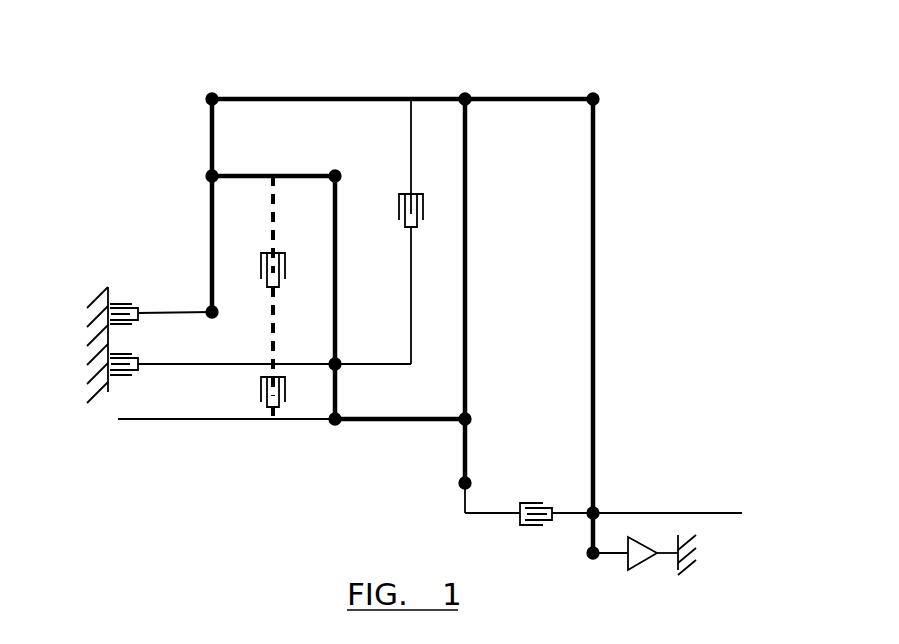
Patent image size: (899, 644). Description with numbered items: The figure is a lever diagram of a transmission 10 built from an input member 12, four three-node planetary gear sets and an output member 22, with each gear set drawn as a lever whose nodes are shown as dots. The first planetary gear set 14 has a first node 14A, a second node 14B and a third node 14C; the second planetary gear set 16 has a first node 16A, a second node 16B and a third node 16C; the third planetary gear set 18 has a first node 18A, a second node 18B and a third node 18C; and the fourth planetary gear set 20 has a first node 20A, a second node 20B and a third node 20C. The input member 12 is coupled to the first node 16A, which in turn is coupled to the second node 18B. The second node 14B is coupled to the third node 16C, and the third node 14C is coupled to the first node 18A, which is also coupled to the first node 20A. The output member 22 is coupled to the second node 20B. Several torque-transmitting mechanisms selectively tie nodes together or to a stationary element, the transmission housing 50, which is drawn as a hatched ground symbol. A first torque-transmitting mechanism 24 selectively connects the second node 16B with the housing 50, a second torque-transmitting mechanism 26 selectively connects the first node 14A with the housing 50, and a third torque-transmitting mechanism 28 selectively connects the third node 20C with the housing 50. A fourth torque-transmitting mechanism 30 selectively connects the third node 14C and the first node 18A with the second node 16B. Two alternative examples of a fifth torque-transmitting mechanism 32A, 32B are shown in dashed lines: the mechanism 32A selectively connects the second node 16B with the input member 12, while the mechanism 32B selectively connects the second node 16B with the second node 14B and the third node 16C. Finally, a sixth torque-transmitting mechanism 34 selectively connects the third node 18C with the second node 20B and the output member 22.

The transmission 10 is at (677, 72).
The input member 12 is at (136, 422).
The first planetary gear set 14 is at (195, 104).
The first node 14A is at (213, 318).
The second node 14B is at (208, 174).
The third node 14C is at (212, 95).
The second planetary gear set 16 is at (320, 157).
The first node 16A is at (334, 425).
The second node 16B is at (340, 368).
The third node 16C is at (336, 172).
The third planetary gear set 18 is at (448, 509).
The first node 18A is at (466, 94).
The second node 18B is at (470, 416).
The third node 18C is at (459, 485).
The fourth planetary gear set 20 is at (587, 574).
The first node 20A is at (594, 94).
The second node 20B is at (596, 508).
The third node 20C is at (588, 556).
The output member 22 is at (713, 512).
The first torque-transmitting mechanism 24 is at (120, 377).
The second torque-transmitting mechanism 26 is at (121, 303).
The third torque-transmitting mechanism 28 is at (640, 561).
The fourth torque-transmitting mechanism 30 is at (399, 202).
The fifth torque-transmitting mechanism 32A is at (261, 390).
The fifth torque-transmitting mechanism 32B is at (261, 267).
The sixth torque-transmitting mechanism 34 is at (532, 503).
The transmission housing 50 is at (100, 289).